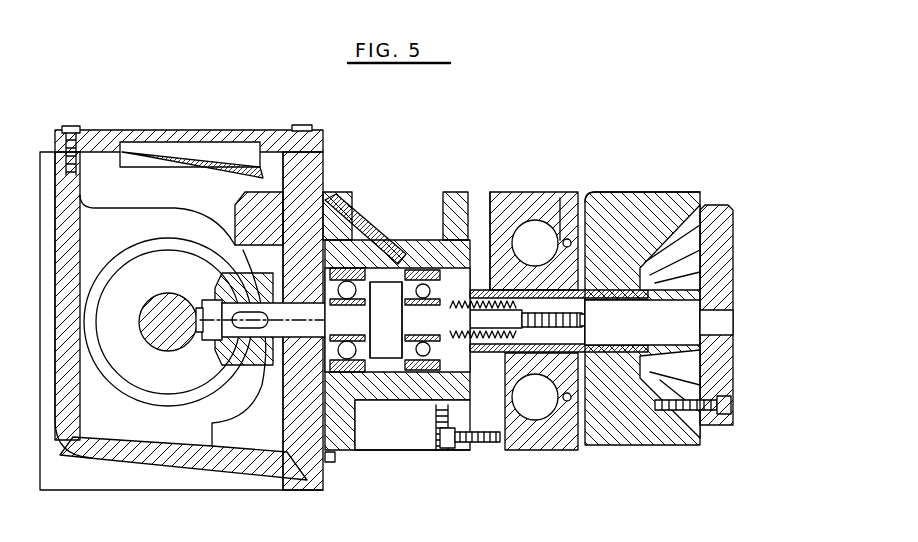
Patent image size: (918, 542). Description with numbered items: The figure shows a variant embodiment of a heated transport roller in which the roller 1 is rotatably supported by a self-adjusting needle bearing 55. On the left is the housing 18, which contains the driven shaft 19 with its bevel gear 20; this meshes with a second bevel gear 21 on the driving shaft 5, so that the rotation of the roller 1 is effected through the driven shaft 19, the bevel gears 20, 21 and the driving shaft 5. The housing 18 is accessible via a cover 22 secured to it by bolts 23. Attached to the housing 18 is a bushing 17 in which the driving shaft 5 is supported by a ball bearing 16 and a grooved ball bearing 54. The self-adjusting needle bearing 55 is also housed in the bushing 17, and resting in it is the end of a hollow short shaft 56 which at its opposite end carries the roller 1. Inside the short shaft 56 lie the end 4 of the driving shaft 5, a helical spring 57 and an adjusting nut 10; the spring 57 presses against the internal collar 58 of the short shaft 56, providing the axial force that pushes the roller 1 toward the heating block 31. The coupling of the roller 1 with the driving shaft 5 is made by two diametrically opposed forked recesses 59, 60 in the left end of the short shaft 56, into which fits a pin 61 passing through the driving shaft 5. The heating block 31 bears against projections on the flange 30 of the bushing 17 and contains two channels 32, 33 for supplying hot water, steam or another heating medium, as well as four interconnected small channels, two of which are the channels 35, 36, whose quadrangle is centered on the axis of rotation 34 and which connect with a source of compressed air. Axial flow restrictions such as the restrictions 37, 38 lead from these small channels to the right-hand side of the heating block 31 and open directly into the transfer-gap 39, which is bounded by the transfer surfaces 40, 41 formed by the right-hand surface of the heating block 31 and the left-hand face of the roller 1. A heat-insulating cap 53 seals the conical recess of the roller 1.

The roller 1 is at (653, 203).
The end of driving shaft 4 is at (497, 330).
The driving shaft 5 is at (332, 458).
The nut 10 is at (613, 326).
The ball bearing 16 is at (308, 490).
The bushing 17 is at (357, 400).
The housing 18 is at (80, 447).
The driven shaft 19 is at (150, 337).
The bevel gear 20 is at (165, 398).
The second bevel gear 21 is at (243, 360).
The cover 22 is at (300, 125).
The bolts 23 is at (68, 126).
The flange 30 is at (455, 448).
The heating block 31 is at (500, 200).
The channel 32 is at (515, 200).
The channel 33 is at (530, 410).
The axis of rotation 34 is at (352, 455).
The small channel 35 is at (523, 232).
The small channel 36 is at (565, 400).
The flow restriction 37 is at (562, 238).
The flow restriction 38 is at (556, 352).
The transfer-gap 39 is at (582, 183).
The transfer surface 40 is at (572, 235).
The transfer surface 41 is at (590, 210).
The heat-insulating cap 53 is at (725, 220).
The grooved ball bearing 54 is at (372, 272).
The self-adjusting needle bearing 55 is at (432, 200).
The hollow short shaft 56 is at (605, 346).
The helical spring 57 is at (478, 200).
The internal collar 58 is at (413, 240).
The forked recess 59 is at (390, 272).
The forked recess 60 is at (396, 345).
The pin 61 is at (402, 338).